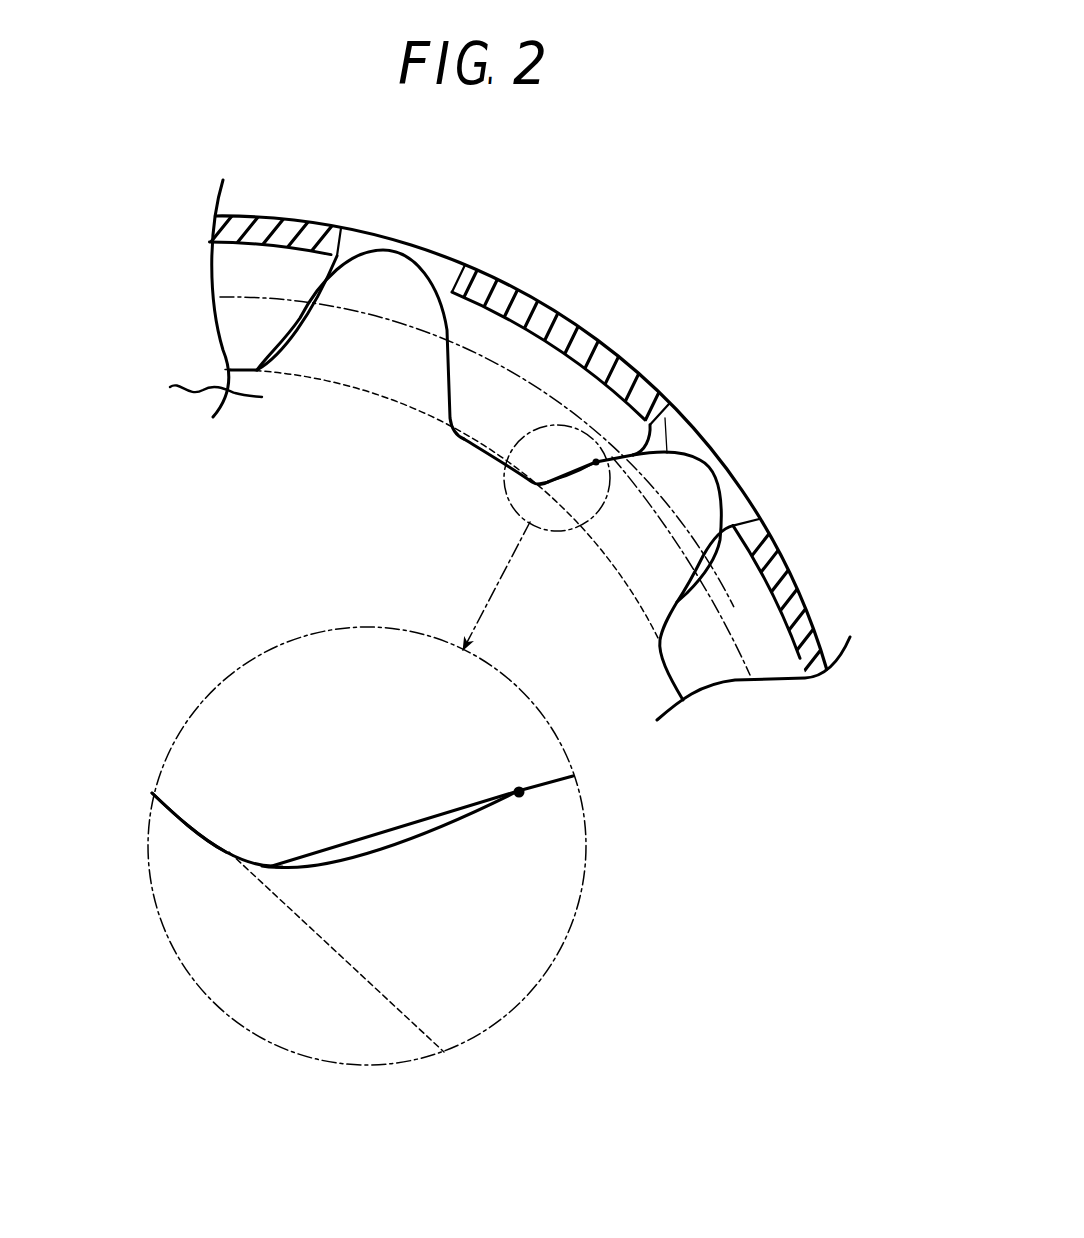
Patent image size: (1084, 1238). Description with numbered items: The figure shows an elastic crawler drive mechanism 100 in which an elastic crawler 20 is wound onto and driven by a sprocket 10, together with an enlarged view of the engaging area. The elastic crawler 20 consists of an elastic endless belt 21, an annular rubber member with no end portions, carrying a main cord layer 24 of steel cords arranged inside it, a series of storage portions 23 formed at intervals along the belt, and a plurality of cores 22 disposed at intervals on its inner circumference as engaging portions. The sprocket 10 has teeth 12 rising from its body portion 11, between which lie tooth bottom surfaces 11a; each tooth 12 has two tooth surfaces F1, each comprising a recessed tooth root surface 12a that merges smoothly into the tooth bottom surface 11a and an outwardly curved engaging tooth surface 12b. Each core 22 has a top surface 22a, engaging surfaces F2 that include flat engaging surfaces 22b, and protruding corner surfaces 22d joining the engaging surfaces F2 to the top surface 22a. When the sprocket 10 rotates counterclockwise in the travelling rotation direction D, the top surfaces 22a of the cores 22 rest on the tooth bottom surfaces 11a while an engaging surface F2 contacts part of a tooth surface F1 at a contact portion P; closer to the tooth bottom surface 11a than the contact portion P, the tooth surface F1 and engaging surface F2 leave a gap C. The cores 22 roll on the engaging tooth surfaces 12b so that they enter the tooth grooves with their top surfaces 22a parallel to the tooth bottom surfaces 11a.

The elastic crawler drive mechanism 100 is at (738, 337).
The sprocket 10 is at (668, 717).
The gear body of first gear 11 is at (199, 383).
The tooth bottom surface 11a is at (459, 403).
The tooth 12 is at (367, 292).
The tooth root surface 12a is at (457, 407).
The engaging tooth surface 12b is at (450, 345).
The elastic crawler 20 is at (622, 346).
The endless belt 21 is at (572, 322).
The core 22 is at (228, 280).
The top surface 22a is at (553, 484).
The flat engaging surface 22b is at (447, 384).
The corner surface 22d is at (269, 869).
The storage portion 23 is at (437, 286).
The main cord layer 24 is at (734, 607).
The contact portion P is at (598, 466).
The gap C is at (553, 488).
The travelling rotation direction D is at (341, 479).
The tooth surface F1 is at (590, 180).
The engaging surface F2 is at (296, 329).